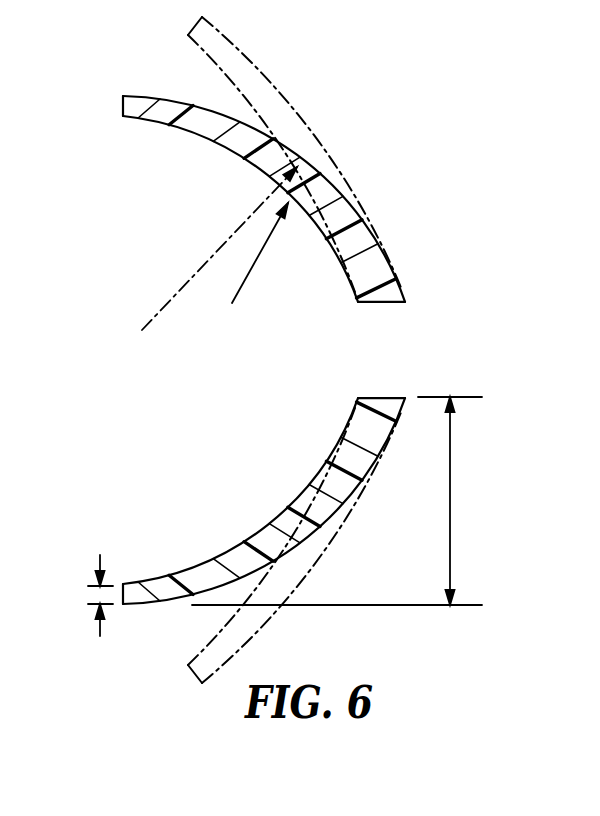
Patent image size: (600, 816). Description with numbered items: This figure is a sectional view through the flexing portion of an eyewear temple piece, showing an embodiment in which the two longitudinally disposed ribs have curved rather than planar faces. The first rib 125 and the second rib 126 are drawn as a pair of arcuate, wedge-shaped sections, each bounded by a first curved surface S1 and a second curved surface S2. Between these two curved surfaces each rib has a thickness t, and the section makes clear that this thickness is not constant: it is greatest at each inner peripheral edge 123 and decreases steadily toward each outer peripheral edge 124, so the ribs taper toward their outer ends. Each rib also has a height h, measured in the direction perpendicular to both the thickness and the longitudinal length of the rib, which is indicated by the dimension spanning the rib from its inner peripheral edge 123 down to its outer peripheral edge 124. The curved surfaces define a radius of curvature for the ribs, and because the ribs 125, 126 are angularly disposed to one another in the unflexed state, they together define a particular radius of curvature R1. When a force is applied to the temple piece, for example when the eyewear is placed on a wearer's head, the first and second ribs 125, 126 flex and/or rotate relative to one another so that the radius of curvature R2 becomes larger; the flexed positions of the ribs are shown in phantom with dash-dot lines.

The inner peripheral edge 123 is at (383, 396).
The outer peripheral edge 124 is at (122, 108).
The first rib 125 is at (366, 246).
The second rib 126 is at (238, 551).
The first curved surface S1 is at (161, 124).
The second curved surface S2 is at (175, 101).
The radius of curvature R1 is at (251, 266).
The radius of curvature R2 is at (198, 268).
The height h is at (452, 500).
The thickness t is at (103, 596).